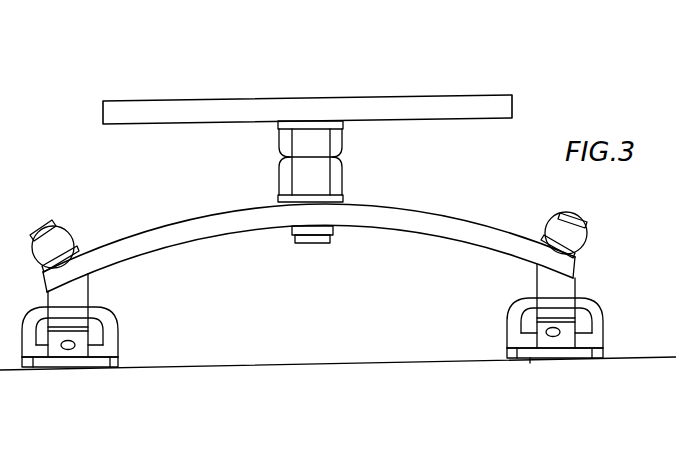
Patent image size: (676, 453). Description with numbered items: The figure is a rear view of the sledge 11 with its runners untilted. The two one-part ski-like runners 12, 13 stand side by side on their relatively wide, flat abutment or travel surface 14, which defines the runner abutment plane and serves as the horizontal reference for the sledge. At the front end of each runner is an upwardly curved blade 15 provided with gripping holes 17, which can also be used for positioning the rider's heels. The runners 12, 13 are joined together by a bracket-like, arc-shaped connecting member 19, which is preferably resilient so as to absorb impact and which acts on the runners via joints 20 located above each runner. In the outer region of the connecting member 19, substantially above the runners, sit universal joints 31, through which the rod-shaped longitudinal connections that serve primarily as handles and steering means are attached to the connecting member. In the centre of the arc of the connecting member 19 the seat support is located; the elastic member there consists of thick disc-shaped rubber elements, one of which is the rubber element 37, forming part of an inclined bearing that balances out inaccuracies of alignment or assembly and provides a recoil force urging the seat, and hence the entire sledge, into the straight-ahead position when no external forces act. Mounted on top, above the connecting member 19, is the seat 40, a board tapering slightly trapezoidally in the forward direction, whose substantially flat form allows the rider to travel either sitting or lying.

The sledge 11 is at (528, 56).
The runner 12 is at (65, 367).
The runner 13 is at (553, 358).
The travel surface 14 is at (531, 362).
The upwardly curved blade 15 is at (600, 312).
The gripping holes 17 is at (532, 314).
The connecting member 19 is at (200, 219).
The joint 20 is at (88, 298).
The universal joint 31 is at (581, 238).
The rubber element 37 is at (322, 178).
The seat 40 is at (394, 99).